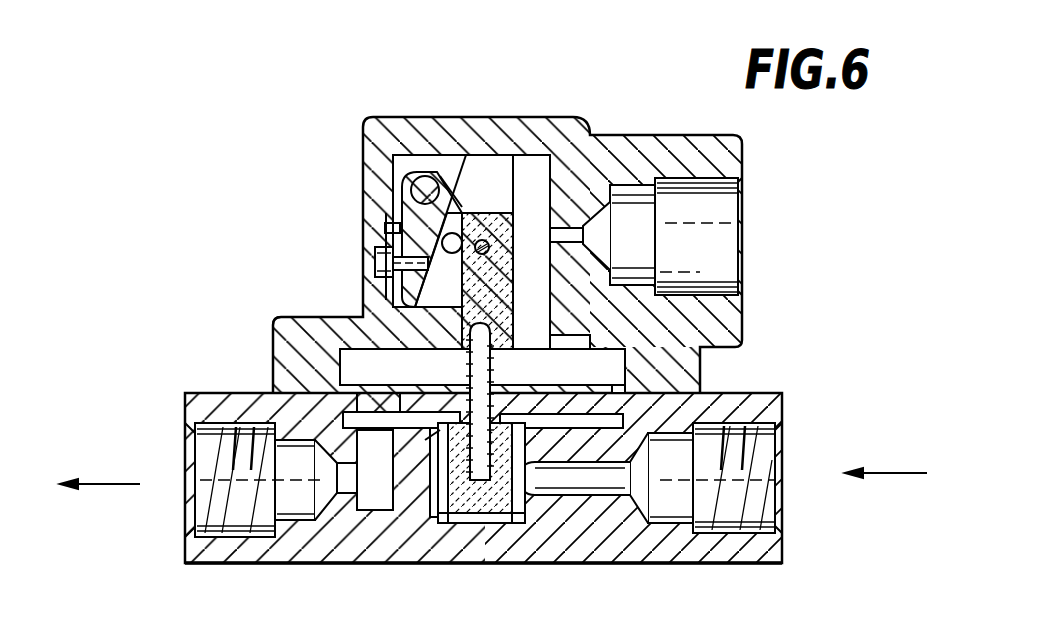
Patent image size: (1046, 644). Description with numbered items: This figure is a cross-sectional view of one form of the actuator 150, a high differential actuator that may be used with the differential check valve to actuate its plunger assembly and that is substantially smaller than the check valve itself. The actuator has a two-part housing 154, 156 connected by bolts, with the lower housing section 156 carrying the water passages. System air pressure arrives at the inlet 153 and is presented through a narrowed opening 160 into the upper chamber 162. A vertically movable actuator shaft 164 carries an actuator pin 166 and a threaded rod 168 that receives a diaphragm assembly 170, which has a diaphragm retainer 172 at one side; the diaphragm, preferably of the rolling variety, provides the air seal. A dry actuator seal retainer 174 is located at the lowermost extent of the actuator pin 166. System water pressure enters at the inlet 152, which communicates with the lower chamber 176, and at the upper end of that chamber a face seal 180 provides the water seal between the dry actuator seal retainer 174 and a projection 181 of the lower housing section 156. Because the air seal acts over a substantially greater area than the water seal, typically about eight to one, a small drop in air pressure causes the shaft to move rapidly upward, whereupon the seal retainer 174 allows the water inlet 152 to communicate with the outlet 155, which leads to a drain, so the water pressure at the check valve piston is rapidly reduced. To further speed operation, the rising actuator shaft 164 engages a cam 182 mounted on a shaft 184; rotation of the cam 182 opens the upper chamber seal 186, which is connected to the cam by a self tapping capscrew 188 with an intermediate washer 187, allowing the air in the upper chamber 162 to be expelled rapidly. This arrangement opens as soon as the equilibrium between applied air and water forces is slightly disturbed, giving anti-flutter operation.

The actuator 150 is at (688, 70).
The system water pressure inlet 152 is at (760, 453).
The inlet 153 is at (723, 238).
The housing 154 is at (373, 115).
The outlet 155 is at (203, 507).
The lower housing section 156 is at (596, 553).
The narrowed opening 160 is at (600, 140).
The chamber 162 is at (490, 167).
The actuator shaft 164 is at (525, 216).
The actuator pin 166 is at (493, 212).
The threaded rod 168 is at (470, 346).
The diaphragm assembly 170 is at (700, 388).
The diaphragm retainer 172 is at (350, 380).
The dry actuator seal retainer 174 is at (513, 525).
The lower chamber 176 is at (440, 513).
The face seal 180 is at (418, 411).
The projection 181 is at (427, 437).
The cam 182 is at (415, 158).
The shaft 184 is at (432, 166).
The upper chamber seal 186 is at (383, 213).
The washer 187 is at (378, 235).
The self tapping capscrew 188 is at (375, 262).